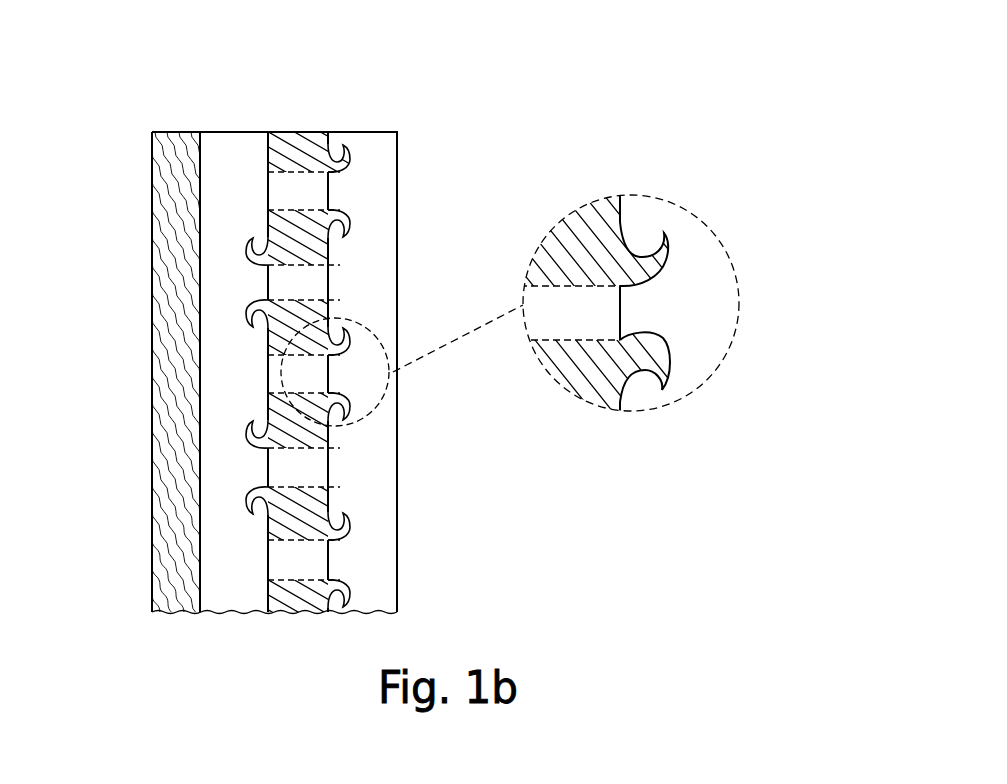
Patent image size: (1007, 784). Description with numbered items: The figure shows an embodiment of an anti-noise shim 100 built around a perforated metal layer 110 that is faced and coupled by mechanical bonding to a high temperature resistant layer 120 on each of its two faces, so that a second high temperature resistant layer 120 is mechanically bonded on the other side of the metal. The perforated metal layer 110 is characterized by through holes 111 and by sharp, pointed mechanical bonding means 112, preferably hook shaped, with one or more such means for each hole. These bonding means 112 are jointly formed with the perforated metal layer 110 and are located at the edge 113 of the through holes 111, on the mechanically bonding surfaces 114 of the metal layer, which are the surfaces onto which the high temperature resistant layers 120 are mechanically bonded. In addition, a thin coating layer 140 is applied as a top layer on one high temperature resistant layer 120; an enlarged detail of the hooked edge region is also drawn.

The anti-noise shim 100 is at (189, 80).
The perforated metal layer 110 is at (287, 153).
The through holes 111 is at (300, 183).
The mechanical bonding means 112 is at (253, 335).
The edge of the through holes 113 is at (252, 456).
The mechanically bonding surfaces 114 is at (268, 466).
The high temperature resistant layer 120 is at (242, 543).
The thin coating layer 140 is at (200, 231).